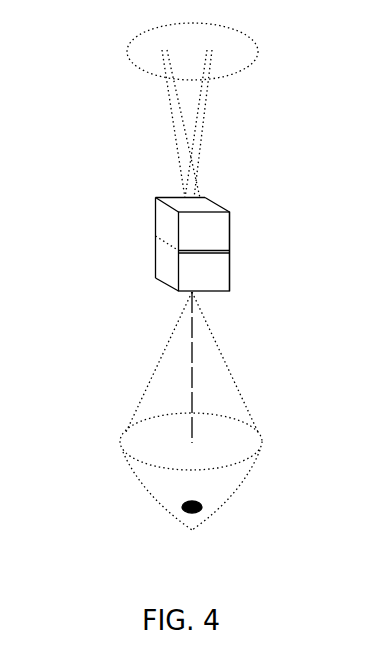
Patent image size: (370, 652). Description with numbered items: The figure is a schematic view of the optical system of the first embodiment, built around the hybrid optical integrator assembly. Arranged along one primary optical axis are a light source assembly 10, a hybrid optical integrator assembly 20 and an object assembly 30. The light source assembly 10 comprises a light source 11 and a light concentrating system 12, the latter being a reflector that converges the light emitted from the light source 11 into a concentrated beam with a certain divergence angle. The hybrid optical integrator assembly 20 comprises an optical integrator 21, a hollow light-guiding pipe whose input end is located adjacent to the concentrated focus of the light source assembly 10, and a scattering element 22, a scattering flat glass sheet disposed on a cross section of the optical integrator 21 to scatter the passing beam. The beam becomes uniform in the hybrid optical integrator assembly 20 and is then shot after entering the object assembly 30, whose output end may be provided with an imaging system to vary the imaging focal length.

The object assembly 30 is at (128, 47).
The hybrid optical integrator assembly 20 is at (154, 267).
The optical integrator 21 is at (228, 235).
The scattering element 22 is at (180, 251).
The light source assembly 10 is at (127, 463).
The light source 11 is at (202, 507).
The light concentrating system 12 is at (247, 484).